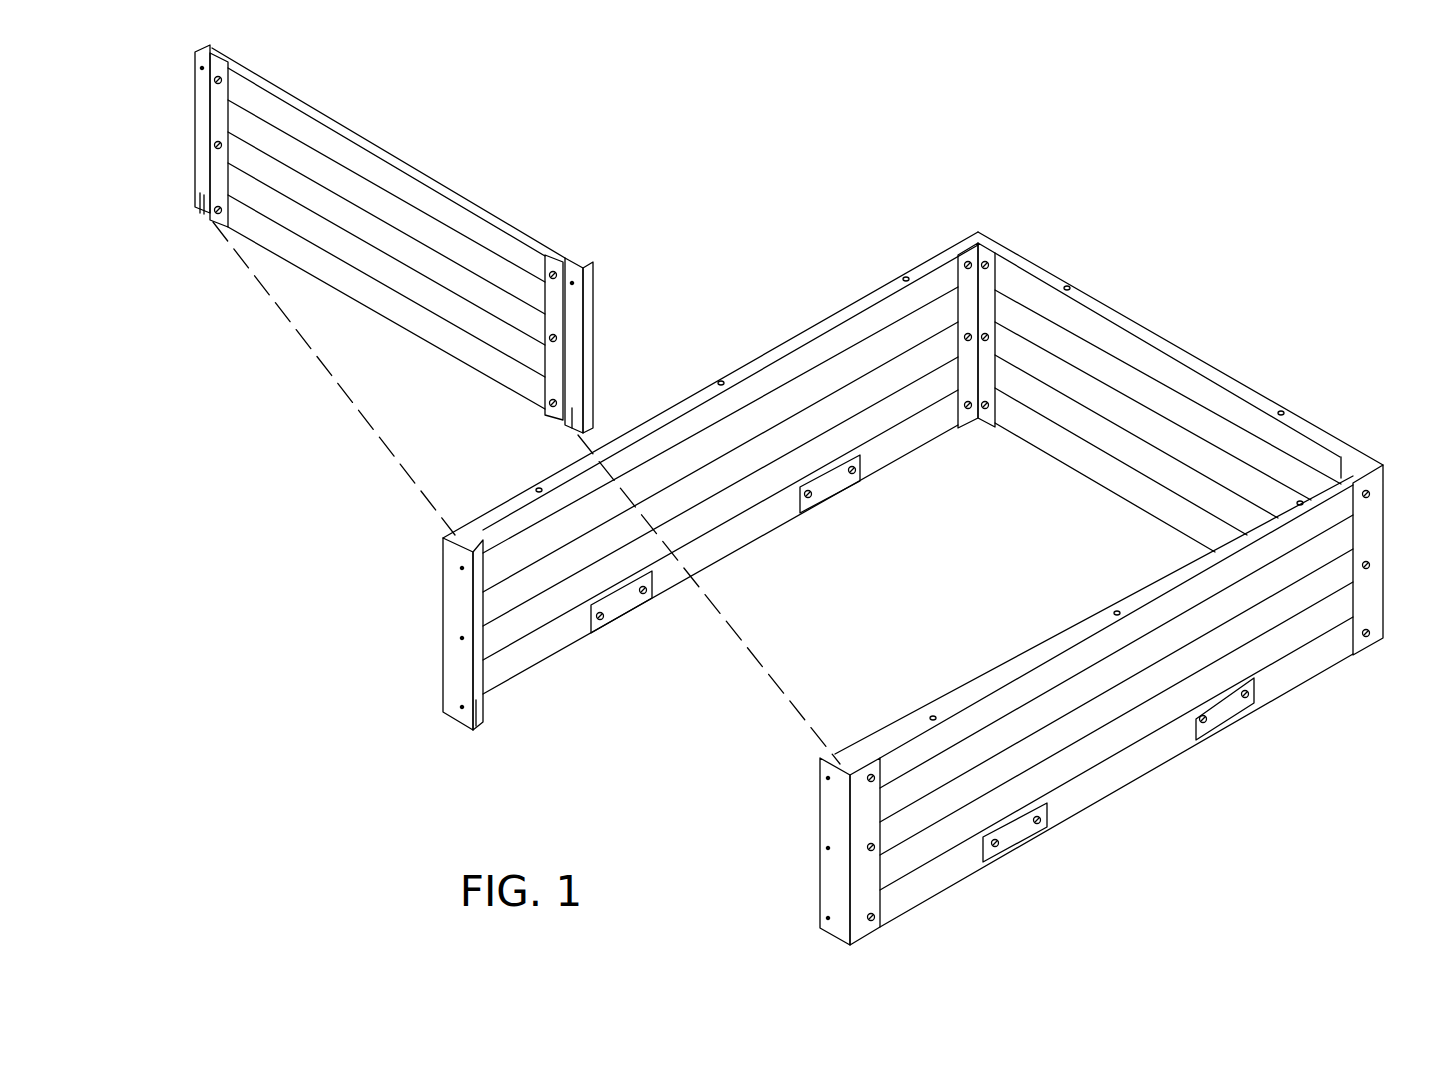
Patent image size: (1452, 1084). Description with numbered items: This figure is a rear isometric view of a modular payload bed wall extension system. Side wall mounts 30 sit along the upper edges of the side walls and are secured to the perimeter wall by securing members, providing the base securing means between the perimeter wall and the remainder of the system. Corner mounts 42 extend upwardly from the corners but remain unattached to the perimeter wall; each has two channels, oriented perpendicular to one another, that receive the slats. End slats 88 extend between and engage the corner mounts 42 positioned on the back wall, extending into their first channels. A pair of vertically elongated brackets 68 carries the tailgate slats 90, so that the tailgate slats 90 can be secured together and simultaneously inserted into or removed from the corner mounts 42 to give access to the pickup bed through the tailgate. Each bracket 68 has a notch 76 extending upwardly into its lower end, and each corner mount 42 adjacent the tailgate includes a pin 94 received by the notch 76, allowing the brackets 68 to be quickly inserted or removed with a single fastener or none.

The side wall mount 30 is at (626, 618).
The corner mount 42 is at (980, 290).
The bracket 68 is at (197, 68).
The notch 76 is at (203, 216).
The end slat 88 is at (1237, 440).
The tailgate slat 90 is at (357, 194).
The pin 94 is at (480, 705).